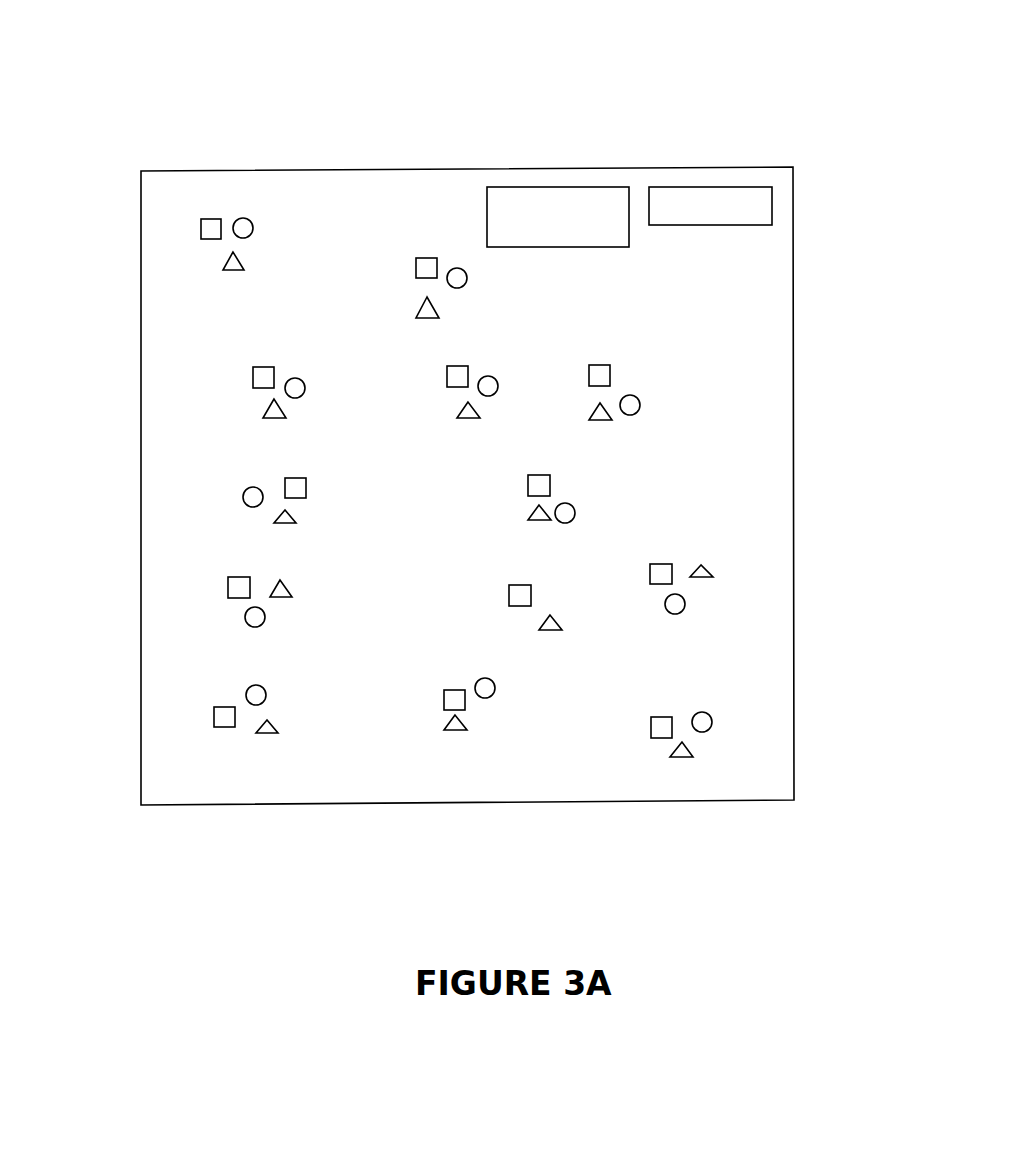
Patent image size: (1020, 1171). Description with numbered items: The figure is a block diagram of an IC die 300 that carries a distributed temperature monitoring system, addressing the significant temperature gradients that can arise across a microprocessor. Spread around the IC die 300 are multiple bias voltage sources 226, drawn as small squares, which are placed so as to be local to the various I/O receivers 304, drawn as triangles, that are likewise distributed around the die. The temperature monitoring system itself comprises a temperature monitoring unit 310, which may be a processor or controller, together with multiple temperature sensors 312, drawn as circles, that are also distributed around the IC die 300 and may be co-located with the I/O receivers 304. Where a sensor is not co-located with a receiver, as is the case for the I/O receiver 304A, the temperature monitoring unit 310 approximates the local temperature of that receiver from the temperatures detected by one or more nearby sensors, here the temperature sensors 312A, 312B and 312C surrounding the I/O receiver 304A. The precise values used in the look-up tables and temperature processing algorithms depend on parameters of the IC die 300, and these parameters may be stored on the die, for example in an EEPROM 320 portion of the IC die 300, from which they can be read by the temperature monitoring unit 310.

The IC die 300 is at (793, 295).
The temperature monitoring unit 310 is at (502, 187).
The EEPROM 320 is at (690, 187).
The bias voltage sources 226 is at (202, 218).
The temperature sensors 312 is at (242, 217).
The I/O receivers 304 is at (227, 265).
The temperature sensor 312A is at (685, 604).
The temperature sensor 312B is at (575, 513).
The temperature sensor 312C is at (495, 688).
The I/O receiver 304A is at (560, 628).